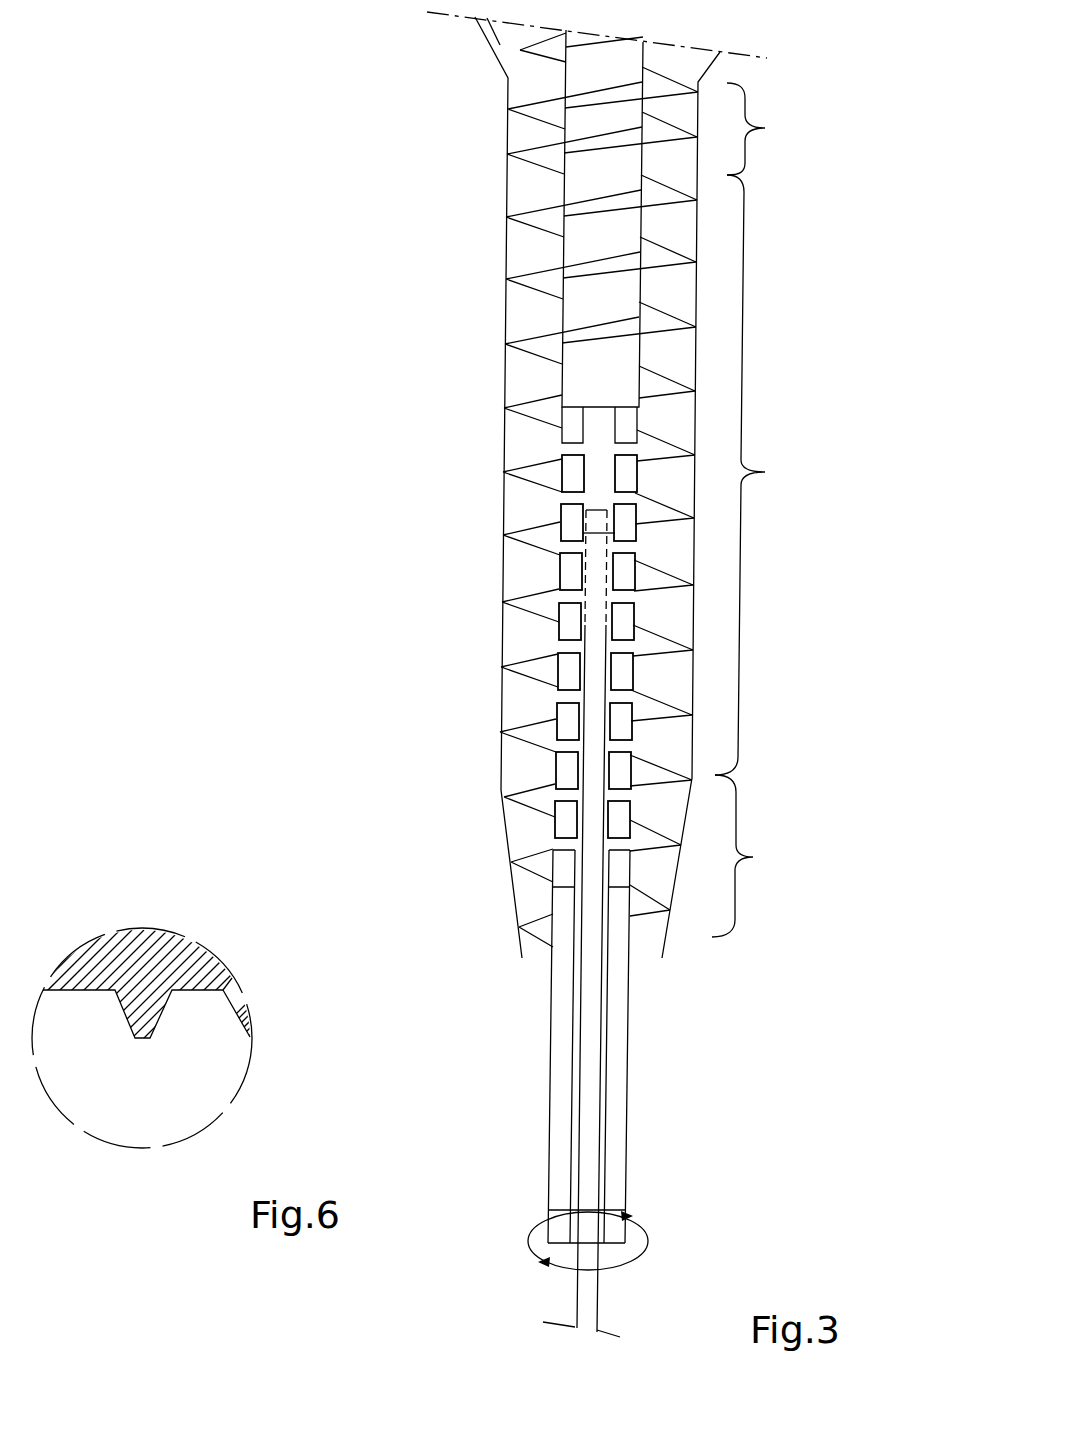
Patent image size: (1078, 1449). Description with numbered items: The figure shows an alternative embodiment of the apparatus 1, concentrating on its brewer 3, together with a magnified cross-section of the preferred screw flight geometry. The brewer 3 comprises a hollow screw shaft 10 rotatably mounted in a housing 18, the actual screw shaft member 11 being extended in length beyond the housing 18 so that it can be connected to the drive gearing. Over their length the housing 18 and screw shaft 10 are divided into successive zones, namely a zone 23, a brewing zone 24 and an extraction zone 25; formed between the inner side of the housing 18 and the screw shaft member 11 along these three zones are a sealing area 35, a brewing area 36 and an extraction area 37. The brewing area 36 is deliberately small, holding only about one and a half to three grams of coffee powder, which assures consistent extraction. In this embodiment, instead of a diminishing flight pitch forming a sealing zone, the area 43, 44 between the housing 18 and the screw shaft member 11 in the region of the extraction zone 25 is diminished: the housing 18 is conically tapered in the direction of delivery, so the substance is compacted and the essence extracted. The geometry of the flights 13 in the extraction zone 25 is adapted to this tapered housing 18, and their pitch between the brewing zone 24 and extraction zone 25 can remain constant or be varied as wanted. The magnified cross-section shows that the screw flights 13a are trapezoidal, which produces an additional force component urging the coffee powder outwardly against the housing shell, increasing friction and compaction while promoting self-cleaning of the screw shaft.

In FIG. 3, the apparatus 1 is at (310, 403).
In FIG. 3, the brewer 3 is at (410, 310).
In FIG. 3, the screw shaft 10 is at (615, 353).
In FIG. 3, the screw shaft member 11 is at (520, 690).
In FIG. 3, the flights 13 is at (513, 532).
In FIG. 6, the screw flights 13a is at (138, 1020).
In FIG. 3, the housing 18 is at (500, 422).
In FIG. 3, the zone 23 is at (765, 129).
In FIG. 3, the brewing zone 24 is at (759, 475).
In FIG. 3, the extraction zone 25 is at (753, 856).
In FIG. 3, the sealing area 35 is at (680, 113).
In FIG. 3, the brewing area 36 is at (650, 680).
In FIG. 3, the extraction area 37 is at (663, 815).
In FIG. 3, the area 43 is at (513, 622).
In FIG. 3, the area 44 is at (515, 808).